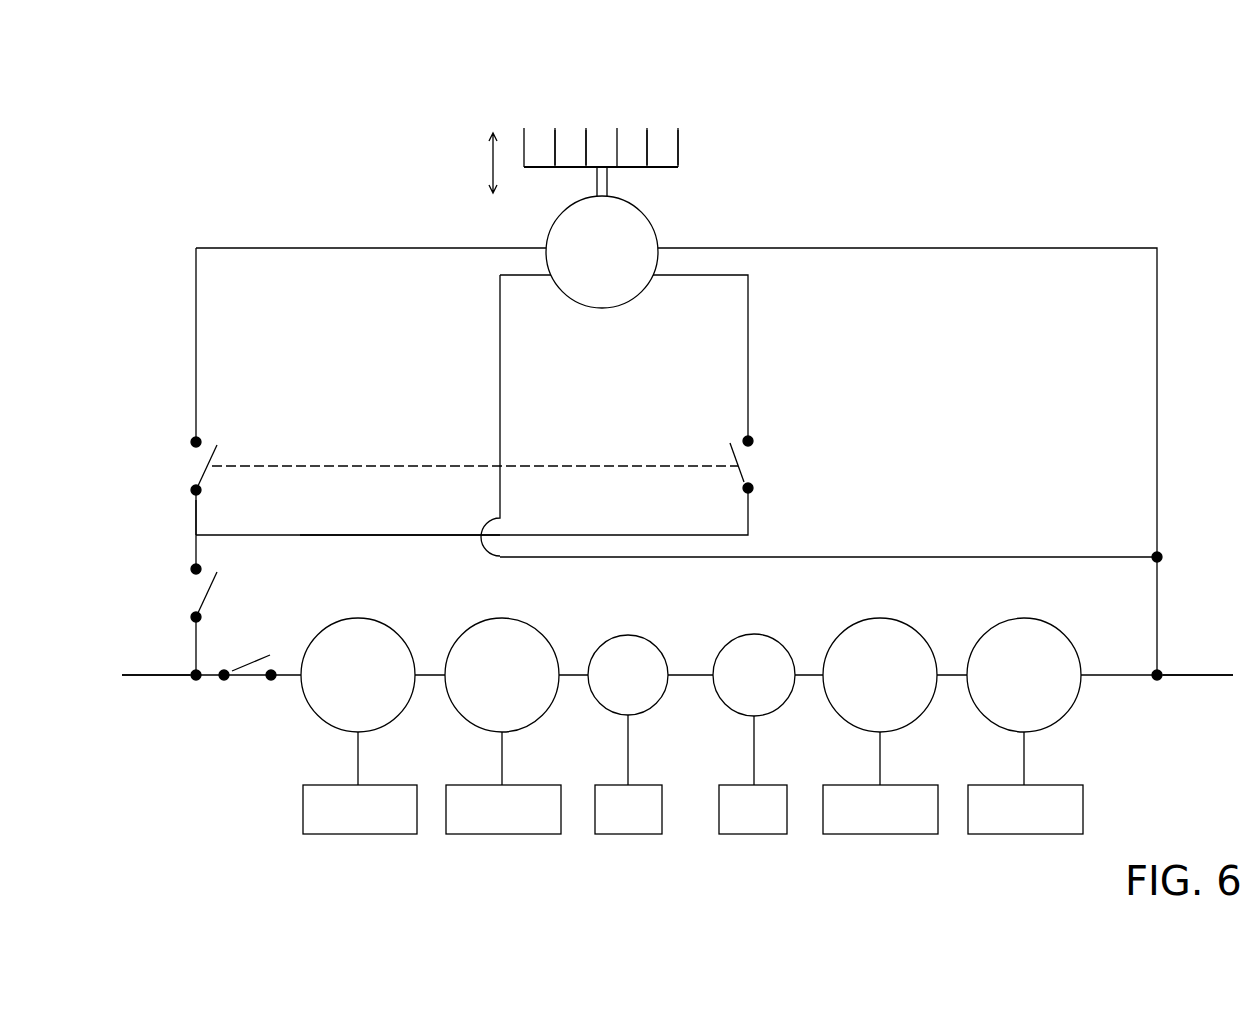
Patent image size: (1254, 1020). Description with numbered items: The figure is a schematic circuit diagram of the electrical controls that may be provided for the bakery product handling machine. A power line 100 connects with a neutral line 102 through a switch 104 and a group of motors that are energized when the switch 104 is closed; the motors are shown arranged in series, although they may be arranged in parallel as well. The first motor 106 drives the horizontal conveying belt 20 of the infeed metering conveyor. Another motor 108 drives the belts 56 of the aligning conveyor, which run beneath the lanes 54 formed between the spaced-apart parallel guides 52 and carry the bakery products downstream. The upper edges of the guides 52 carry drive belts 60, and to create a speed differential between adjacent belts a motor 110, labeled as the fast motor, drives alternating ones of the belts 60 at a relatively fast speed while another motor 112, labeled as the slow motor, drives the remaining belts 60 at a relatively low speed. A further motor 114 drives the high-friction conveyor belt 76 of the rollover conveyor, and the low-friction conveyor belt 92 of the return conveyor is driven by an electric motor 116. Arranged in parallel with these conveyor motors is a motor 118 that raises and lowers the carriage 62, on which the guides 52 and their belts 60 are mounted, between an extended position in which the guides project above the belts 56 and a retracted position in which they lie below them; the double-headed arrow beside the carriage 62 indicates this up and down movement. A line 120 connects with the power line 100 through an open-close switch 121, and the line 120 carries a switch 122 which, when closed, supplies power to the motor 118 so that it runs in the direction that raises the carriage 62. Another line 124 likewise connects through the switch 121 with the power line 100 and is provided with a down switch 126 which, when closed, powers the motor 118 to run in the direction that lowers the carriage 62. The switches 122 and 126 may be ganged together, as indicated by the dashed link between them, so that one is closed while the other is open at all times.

The conveying belt 20 is at (360, 808).
The guides 52 is at (583, 138).
The lanes 54 is at (662, 140).
The driven belts 56 is at (513, 808).
The drive belts 60 is at (635, 825).
The carriage 62 is at (538, 168).
The conveyor belt 76 is at (907, 808).
The conveyor belt 92 is at (1040, 808).
The power line 100 is at (138, 680).
The neutral line 102 is at (1203, 677).
The switch 104 is at (248, 658).
The motor 106 is at (353, 645).
The motor 108 is at (498, 645).
The motor 110 is at (623, 648).
The motor 112 is at (753, 645).
The motor 114 is at (877, 645).
The electric motor 116 is at (1020, 645).
The motor 118 is at (640, 236).
The line 120 is at (196, 508).
The open-close switch 121 is at (213, 582).
The switch 122 is at (213, 458).
The line 124 is at (314, 528).
The down switch 126 is at (738, 470).